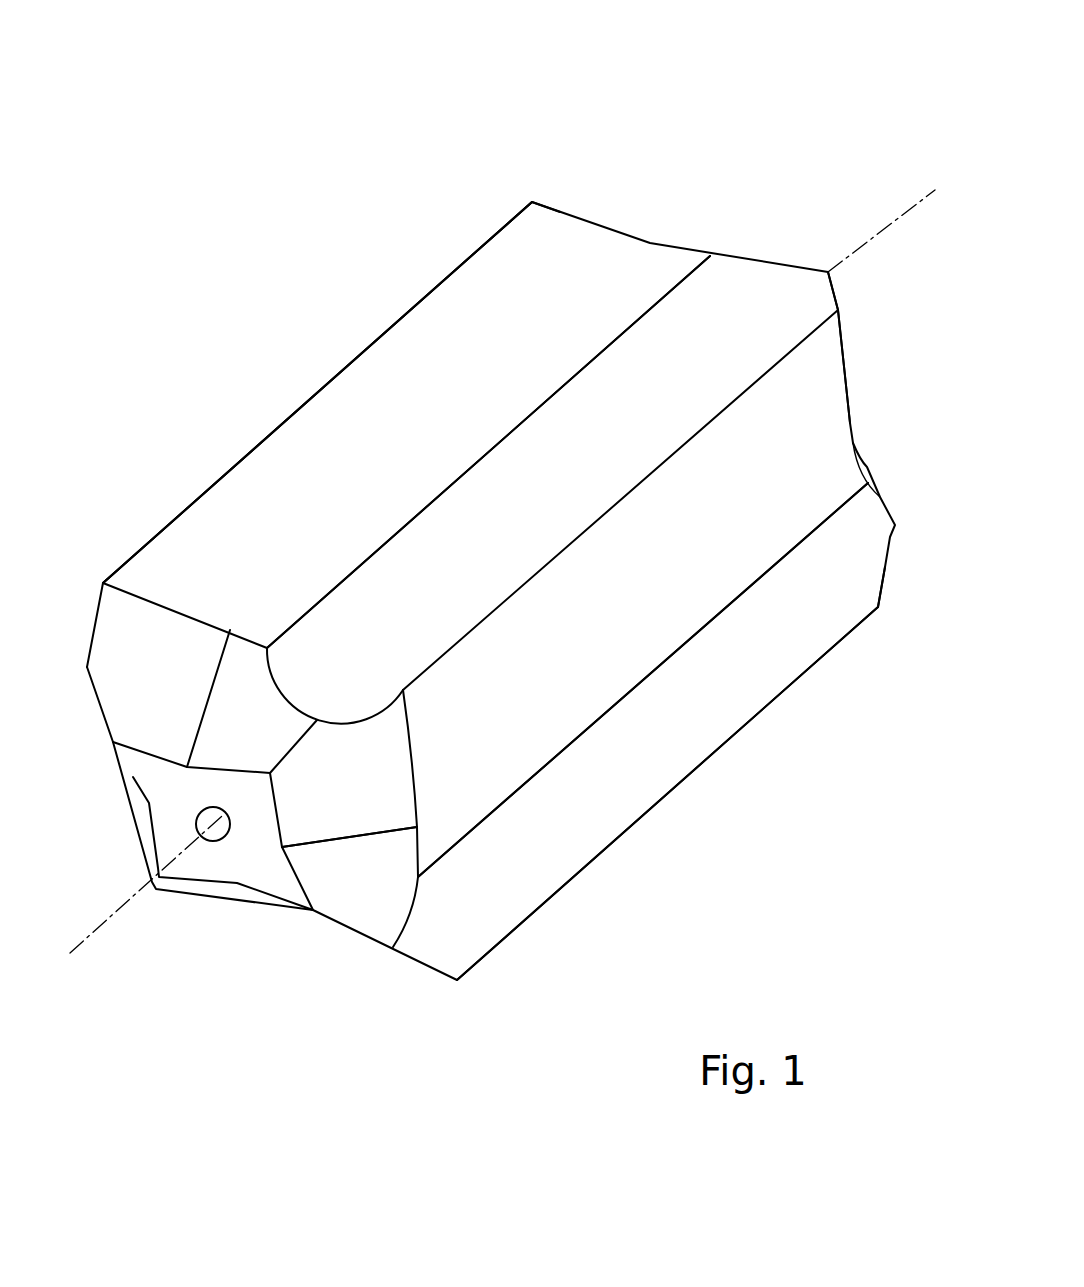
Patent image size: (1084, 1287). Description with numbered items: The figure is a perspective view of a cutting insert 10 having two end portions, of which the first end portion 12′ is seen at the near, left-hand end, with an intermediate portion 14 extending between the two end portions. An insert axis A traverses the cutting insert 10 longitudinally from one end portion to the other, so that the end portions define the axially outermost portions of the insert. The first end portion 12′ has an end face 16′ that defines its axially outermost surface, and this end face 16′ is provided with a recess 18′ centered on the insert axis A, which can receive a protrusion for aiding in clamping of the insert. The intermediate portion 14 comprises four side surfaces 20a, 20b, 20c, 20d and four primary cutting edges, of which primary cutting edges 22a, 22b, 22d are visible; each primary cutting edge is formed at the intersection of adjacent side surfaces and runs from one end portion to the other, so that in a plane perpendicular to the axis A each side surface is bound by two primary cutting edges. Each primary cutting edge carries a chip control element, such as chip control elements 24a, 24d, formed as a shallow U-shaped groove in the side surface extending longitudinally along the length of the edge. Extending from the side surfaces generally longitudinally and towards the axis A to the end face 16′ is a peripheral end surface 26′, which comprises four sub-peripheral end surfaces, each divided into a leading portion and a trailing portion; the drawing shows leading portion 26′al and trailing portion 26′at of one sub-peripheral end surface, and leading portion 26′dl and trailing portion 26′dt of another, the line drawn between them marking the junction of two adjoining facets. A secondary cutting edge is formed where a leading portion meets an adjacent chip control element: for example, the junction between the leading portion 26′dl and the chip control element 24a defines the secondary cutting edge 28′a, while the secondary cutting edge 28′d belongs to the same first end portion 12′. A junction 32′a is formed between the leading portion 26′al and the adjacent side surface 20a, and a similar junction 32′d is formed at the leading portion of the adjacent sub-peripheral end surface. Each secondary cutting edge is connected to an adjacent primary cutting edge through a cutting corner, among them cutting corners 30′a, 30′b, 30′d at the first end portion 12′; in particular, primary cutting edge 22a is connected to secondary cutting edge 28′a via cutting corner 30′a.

The cutting insert 10 is at (745, 107).
The first end portion 12′ is at (206, 1022).
The intermediate portion 14 is at (300, 237).
The end face 16′ is at (148, 780).
The recess 18′ is at (217, 836).
The side surface 20a is at (358, 410).
The side surface 20b is at (178, 425).
The side surface 20c is at (703, 836).
The side surface 20d is at (752, 640).
The primary cutting edge 22a is at (703, 428).
The primary cutting edge 22b is at (443, 270).
The primary cutting edge 22d is at (734, 736).
The chip control element 24a is at (738, 305).
The chip control element 24d is at (586, 808).
The peripheral end surface 26′ is at (309, 866).
The leading portion of sub-peripheral end surface 26′al is at (143, 630).
The trailing portion of sub-peripheral end surface 26′at is at (237, 660).
The leading portion of sub-peripheral end surface 26′dl is at (387, 747).
The trailing portion of sub-peripheral end surface 26′dt is at (367, 912).
The secondary cutting edge 28′a is at (340, 720).
The secondary cutting edge 28′d is at (425, 968).
The cutting corner 30′a is at (403, 690).
The cutting corner 30′b is at (103, 583).
The cutting corner 30′d is at (457, 980).
The junction 32′a is at (213, 623).
The junction 32′d is at (417, 785).
The insert axis A is at (97, 930).